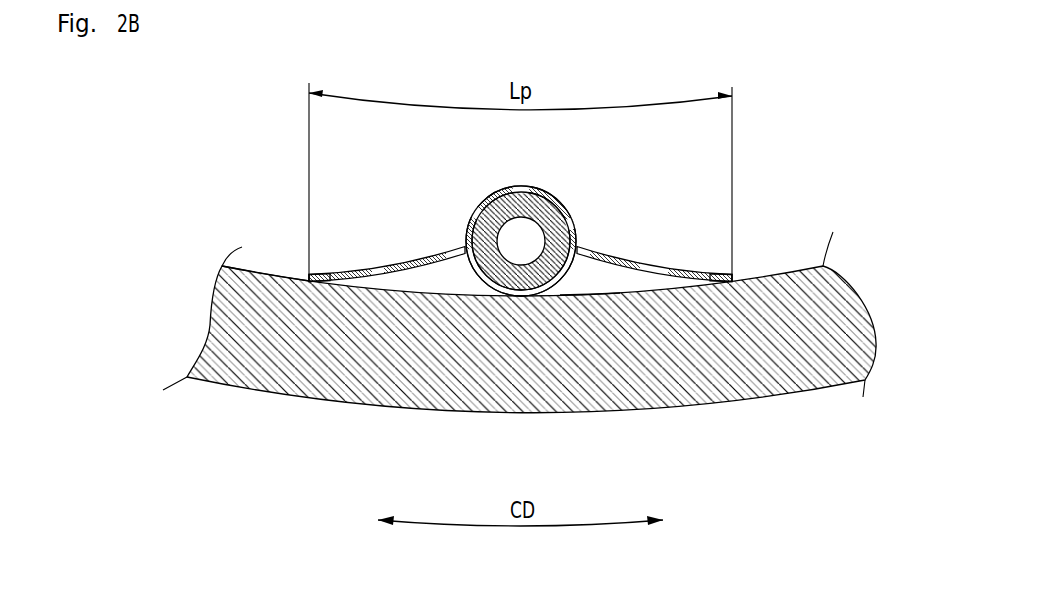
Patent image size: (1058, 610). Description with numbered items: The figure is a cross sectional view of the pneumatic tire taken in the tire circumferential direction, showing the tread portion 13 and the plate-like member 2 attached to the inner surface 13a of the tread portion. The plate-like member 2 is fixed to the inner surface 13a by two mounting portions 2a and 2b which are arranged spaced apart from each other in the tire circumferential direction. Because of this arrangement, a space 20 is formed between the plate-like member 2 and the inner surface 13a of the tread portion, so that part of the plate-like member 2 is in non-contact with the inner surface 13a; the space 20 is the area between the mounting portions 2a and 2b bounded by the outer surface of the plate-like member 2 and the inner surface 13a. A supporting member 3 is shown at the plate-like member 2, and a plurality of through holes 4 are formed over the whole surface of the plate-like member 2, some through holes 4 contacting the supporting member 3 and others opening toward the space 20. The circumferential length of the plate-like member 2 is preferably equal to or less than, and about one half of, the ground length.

The tread portion 13 is at (794, 411).
The inner surface of the tread portion 13a is at (271, 267).
The plate-like member 2 is at (416, 260).
The mounting portion 2a is at (313, 270).
The mounting portion 2b is at (740, 282).
The supporting member 3 is at (470, 222).
The through holes 4 is at (523, 186).
The space 20 is at (590, 282).